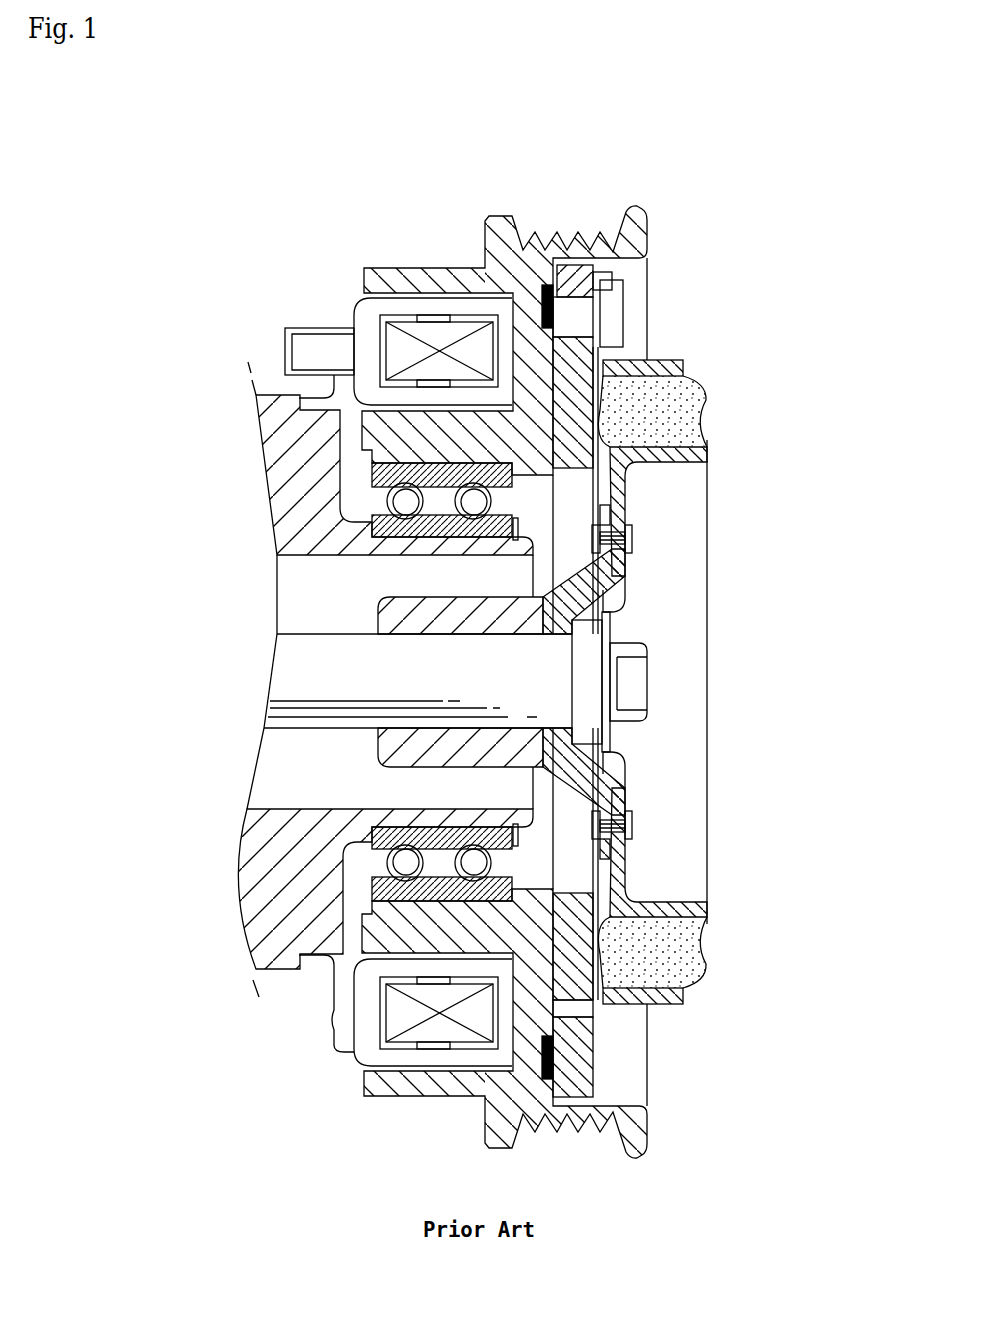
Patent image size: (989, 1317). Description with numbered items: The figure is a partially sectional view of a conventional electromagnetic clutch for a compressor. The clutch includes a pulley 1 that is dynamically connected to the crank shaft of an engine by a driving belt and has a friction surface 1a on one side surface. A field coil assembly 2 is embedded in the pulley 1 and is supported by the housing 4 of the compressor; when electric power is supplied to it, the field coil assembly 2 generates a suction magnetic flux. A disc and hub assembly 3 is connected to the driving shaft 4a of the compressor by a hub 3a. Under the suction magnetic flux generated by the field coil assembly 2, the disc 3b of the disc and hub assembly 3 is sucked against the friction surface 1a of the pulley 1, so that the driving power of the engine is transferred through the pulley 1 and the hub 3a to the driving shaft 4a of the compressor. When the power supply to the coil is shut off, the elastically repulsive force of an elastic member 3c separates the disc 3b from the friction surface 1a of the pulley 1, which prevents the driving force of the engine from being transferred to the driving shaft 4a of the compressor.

The pulley 1 is at (652, 202).
The friction surface 1a is at (556, 361).
The field coil assembly 2 is at (397, 345).
The disc and hub assembly 3 is at (670, 570).
The hub 3a is at (608, 590).
The disc 3b is at (590, 275).
The elastic member 3c is at (657, 405).
The housing 4 is at (348, 545).
The driving shaft 4a is at (290, 668).